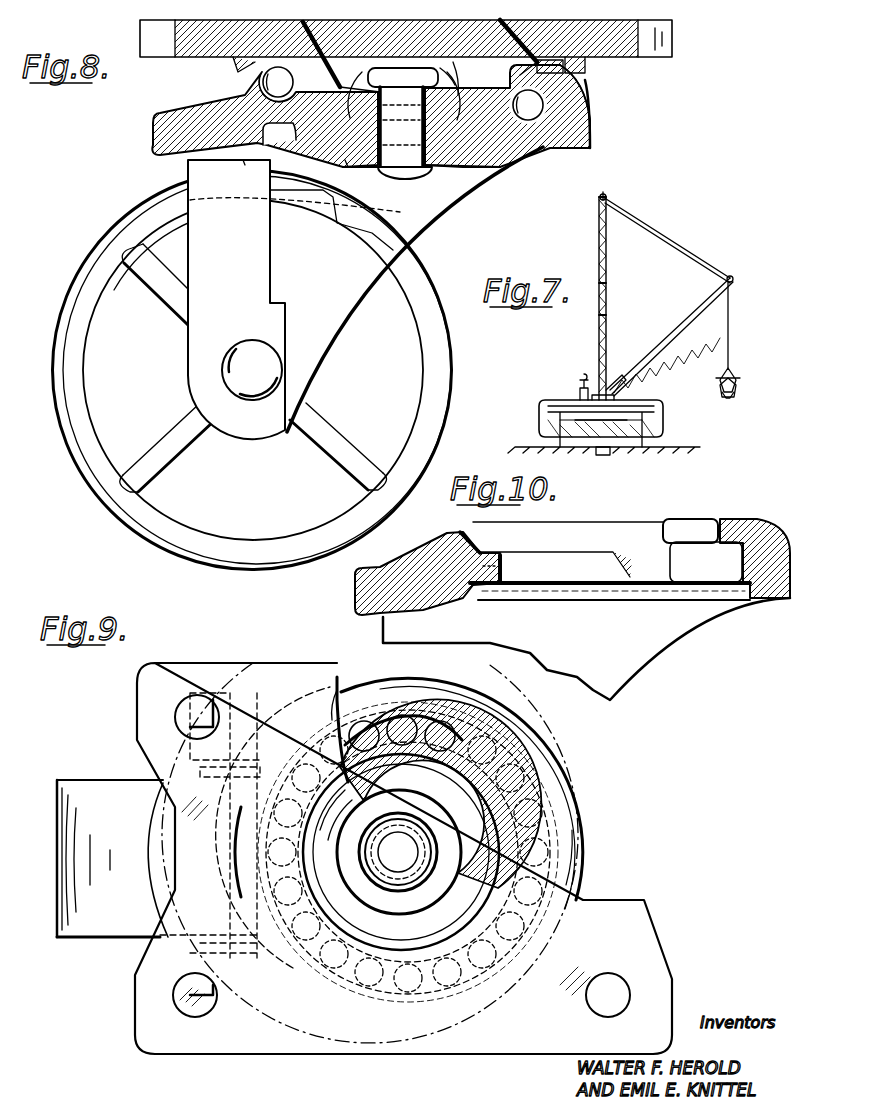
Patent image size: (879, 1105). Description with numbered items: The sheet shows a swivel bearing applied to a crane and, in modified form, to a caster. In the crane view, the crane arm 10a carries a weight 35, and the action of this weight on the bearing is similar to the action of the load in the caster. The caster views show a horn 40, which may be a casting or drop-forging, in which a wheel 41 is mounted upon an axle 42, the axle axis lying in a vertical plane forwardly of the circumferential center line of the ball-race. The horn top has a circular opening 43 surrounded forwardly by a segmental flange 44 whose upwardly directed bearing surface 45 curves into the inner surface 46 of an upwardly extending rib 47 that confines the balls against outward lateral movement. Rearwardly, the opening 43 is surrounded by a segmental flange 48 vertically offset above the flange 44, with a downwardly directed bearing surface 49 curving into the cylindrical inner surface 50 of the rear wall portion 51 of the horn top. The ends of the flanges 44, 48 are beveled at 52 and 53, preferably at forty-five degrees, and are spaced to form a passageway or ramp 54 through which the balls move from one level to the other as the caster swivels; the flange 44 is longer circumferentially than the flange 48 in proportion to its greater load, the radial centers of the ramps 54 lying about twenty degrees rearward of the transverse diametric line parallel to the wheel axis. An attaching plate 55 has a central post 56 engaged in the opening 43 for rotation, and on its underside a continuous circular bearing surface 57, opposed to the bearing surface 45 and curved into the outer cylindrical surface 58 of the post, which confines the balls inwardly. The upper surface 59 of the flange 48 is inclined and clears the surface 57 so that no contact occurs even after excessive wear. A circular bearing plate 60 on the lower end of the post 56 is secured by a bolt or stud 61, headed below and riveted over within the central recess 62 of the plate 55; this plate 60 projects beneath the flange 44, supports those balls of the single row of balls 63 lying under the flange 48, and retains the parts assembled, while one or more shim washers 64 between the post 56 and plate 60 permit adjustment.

In FIG. 7, the crane arm 10a is at (668, 345).
In FIG. 7, the weight 35 is at (736, 395).
In FIG. 8, the horn 40 is at (430, 228).
In FIG. 10, the horn 40 is at (407, 632).
In FIG. 9, the horn 40 is at (165, 895).
In FIG. 8, the wheel 41 is at (433, 332).
In FIG. 9, the wheel 41 is at (100, 798).
In FIG. 8, the axle 42 is at (272, 363).
In FIG. 9, the axle 42 is at (248, 1000).
In FIG. 8, the circular opening 43 is at (348, 165).
In FIG. 10, the circular opening 43 is at (520, 580).
In FIG. 8, the segmental flange 44 is at (246, 162).
In FIG. 10, the segmental flange 44 is at (478, 600).
In FIG. 9, the segmental flange 44 is at (478, 655).
In FIG. 8, the bearing surface 45 is at (268, 132).
In FIG. 10, the bearing surface 45 is at (498, 560).
In FIG. 9, the bearing surface 45 is at (366, 722).
In FIG. 10, the inner surface 46 is at (466, 533).
In FIG. 8, the rib 47 is at (262, 84).
In FIG. 10, the rib 47 is at (445, 535).
In FIG. 8, the segmental flange 48 is at (565, 70).
In FIG. 10, the segmental flange 48 is at (742, 530).
In FIG. 8, the bearing surface 49 is at (572, 85).
In FIG. 10, the bearing surface 49 is at (730, 555).
In FIG. 8, the cylindrical inner surface 50 is at (590, 122).
In FIG. 10, the cylindrical inner surface 50 is at (742, 585).
In FIG. 8, the rear wall portion 51 is at (588, 140).
In FIG. 10, the rear wall portion 51 is at (768, 560).
In FIG. 9, the rear wall portion 51 is at (560, 855).
In FIG. 10, the beveled end 52 is at (628, 570).
In FIG. 9, the beveled end 52 is at (438, 728).
In FIG. 10, the beveled end 53 is at (655, 558).
In FIG. 9, the beveled end 53 is at (463, 745).
In FIG. 10, the passageway or ramp 54 is at (633, 558).
In FIG. 9, the passageway or ramp 54 is at (446, 740).
In FIG. 8, the attaching plate 55 is at (207, 43).
In FIG. 9, the attaching plate 55 is at (545, 1040).
In FIG. 8, the central post 56 is at (372, 85).
In FIG. 9, the central post 56 is at (480, 840).
In FIG. 8, the circular bearing surface 57 is at (312, 35).
In FIG. 8, the outer cylindrical surface 58 is at (350, 80).
In FIG. 8, the upper surface 59 is at (466, 62).
In FIG. 10, the upper surface 59 is at (700, 519).
In FIG. 9, the upper surface 59 is at (500, 800).
In FIG. 8, the circular bearing plate 60 is at (503, 140).
In FIG. 8, the bolt or stud 61 is at (398, 160).
In FIG. 9, the bolt or stud 61 is at (398, 880).
In FIG. 8, the central recess 62 is at (478, 60).
In FIG. 9, the central recess 62 is at (428, 905).
In FIG. 8, the balls 63 is at (272, 88).
In FIG. 9, the balls 63 is at (400, 715).
In FIG. 8, the shim washers 64 is at (463, 150).